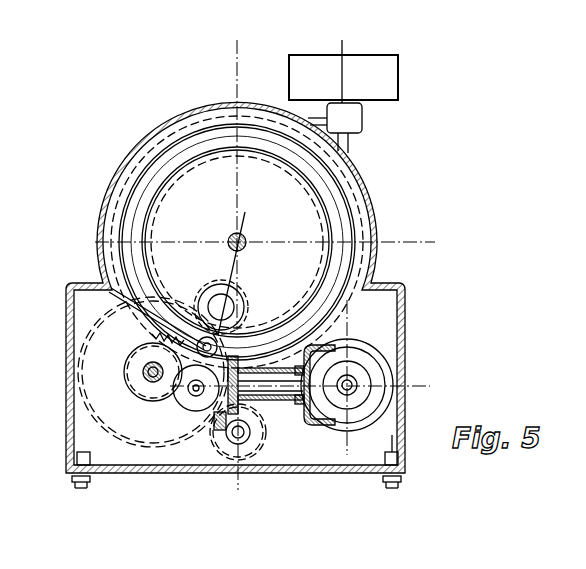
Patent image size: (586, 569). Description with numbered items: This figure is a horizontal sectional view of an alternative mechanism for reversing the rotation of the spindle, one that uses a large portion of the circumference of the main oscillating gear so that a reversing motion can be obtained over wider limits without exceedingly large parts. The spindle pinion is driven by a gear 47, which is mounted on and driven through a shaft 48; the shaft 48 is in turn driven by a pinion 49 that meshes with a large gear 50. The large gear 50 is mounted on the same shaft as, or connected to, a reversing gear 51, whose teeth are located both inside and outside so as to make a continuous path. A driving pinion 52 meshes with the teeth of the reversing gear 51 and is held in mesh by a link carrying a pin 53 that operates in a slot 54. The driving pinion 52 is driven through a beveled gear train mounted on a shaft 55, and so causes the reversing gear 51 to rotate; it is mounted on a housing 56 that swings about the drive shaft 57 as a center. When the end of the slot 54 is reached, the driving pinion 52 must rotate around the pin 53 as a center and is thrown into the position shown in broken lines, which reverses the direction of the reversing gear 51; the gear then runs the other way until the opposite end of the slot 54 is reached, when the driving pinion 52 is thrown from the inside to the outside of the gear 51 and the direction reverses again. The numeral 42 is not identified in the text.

The pinion 42 is at (190, 410).
The gear 47 is at (143, 432).
The shaft 48 is at (147, 379).
The pinion 49 is at (123, 376).
The large gear 50 is at (143, 317).
The reversing gear 51 is at (178, 133).
The driving pinion 52 is at (216, 333).
The pin 53 is at (97, 284).
The slot 54 is at (240, 133).
The shaft 55 is at (292, 396).
The housing 56 is at (274, 402).
The drive shaft 57 is at (358, 378).